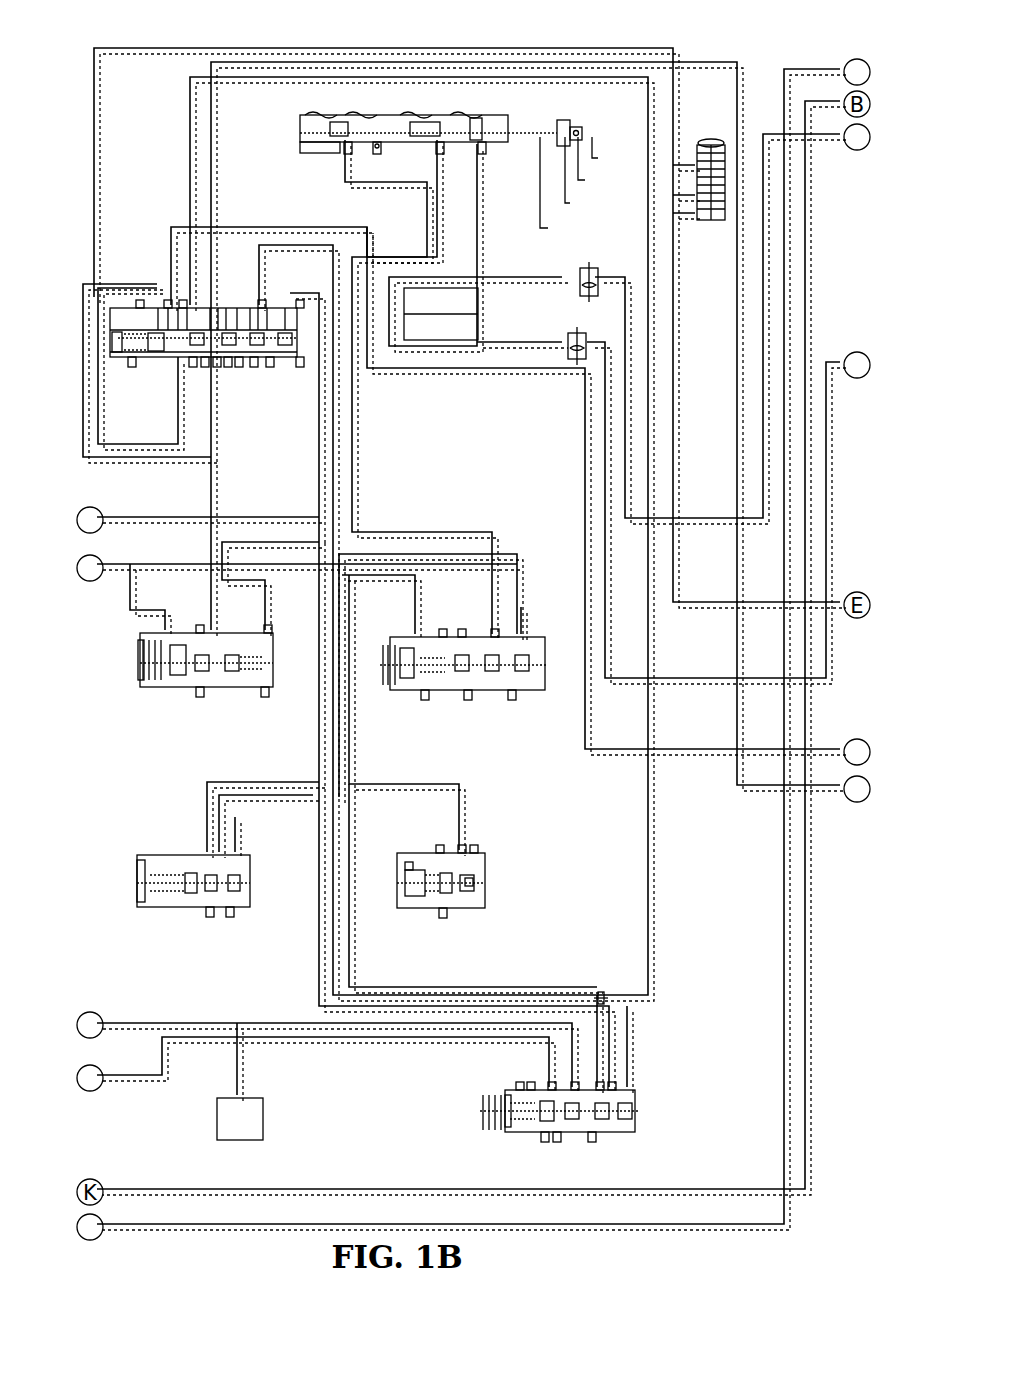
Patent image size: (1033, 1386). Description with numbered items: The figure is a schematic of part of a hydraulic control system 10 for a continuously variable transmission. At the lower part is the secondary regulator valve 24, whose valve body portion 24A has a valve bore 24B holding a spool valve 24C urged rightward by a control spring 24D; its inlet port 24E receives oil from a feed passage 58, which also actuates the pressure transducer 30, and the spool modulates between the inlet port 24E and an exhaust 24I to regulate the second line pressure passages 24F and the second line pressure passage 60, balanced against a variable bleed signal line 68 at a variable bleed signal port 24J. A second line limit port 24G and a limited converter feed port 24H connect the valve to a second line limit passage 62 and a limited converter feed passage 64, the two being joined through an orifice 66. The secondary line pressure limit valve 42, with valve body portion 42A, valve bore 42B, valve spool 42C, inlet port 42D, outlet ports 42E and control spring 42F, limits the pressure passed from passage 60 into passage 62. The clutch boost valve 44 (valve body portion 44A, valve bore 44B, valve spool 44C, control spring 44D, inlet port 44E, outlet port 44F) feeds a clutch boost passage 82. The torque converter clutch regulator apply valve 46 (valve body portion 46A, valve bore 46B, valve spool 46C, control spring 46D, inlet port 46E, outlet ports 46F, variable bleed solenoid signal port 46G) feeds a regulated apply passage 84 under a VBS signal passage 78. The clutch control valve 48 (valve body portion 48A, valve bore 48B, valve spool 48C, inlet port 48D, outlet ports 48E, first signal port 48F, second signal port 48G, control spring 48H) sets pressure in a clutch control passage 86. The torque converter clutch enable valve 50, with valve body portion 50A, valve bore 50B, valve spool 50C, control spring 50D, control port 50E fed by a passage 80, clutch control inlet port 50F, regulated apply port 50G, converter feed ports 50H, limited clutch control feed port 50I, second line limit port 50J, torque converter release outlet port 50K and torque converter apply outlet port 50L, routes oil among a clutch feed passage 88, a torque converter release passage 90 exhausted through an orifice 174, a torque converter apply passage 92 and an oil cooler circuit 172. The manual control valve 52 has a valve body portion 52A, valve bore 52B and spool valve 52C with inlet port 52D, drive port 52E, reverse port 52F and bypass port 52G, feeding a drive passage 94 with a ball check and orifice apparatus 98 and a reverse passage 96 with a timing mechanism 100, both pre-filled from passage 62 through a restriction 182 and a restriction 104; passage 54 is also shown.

The control system 10 is at (352, 45).
The secondary regulator valve 24 is at (470, 1115).
The valve body portion 24A is at (505, 1100).
The valve bore 24B is at (552, 1110).
The spool valve 24C is at (545, 1135).
The control spring 24D is at (485, 1115).
The inlet port 24E is at (560, 1090).
The second line pressure passages 24F is at (598, 1125).
The second line limit port 24G is at (600, 1095).
The limited converter feed port 24H is at (610, 1110).
The exhaust 24I is at (558, 1138).
The variable bleed signal port 24J is at (500, 1090).
The pressure transducer 30 is at (212, 1130).
The secondary line pressure limit valve 42 is at (140, 858).
The valve body portion 42A is at (150, 865).
The valve bore 42B is at (210, 905).
The valve spool 42C is at (228, 900).
The inlet port 42D is at (205, 850).
The outlet ports 42E is at (240, 855).
The control spring 42F is at (152, 880).
The clutch boost valve 44 is at (398, 860).
The valve body portion 44A is at (440, 855).
The valve bore 44B is at (470, 880).
The valve spool 44C is at (443, 900).
The control spring 44D is at (420, 868).
The inlet port 44E is at (475, 855).
The outlet port 44F is at (468, 866).
The torque converter clutch regulator apply valve 46 is at (132, 662).
The valve body portion 46A is at (140, 645).
The valve bore 46B is at (200, 655).
The valve spool 46C is at (200, 690).
The control spring 46D is at (265, 683).
The inlet port 46E is at (215, 650).
The outlet ports 46F is at (265, 648).
The variable bleed solenoid signal port 46G is at (158, 633).
The clutch control valve 48 is at (390, 660).
The valve body portion 48A is at (405, 640).
The valve bore 48B is at (520, 690).
The valve spool 48C is at (468, 690).
The inlet port 48D is at (500, 580).
The outlet ports 48E is at (524, 640).
The first signal port 48F is at (458, 633).
The second signal port 48G is at (443, 633).
The control spring 48H is at (425, 690).
The torque converter clutch enable valve 50 is at (100, 338).
The valve body portion 50A is at (140, 318).
The valve bore 50B is at (205, 360).
The valve spool 50C is at (268, 352).
The control spring 50D is at (132, 350).
The control port 50E is at (305, 300).
The clutch control inlet port 50F is at (297, 352).
The regulated apply port 50G is at (168, 300).
The converter feed ports 50H is at (195, 350).
The limited clutch control feed port 50I is at (262, 300).
The second line limit port 50J is at (258, 352).
The torque converter release outlet port 50K is at (222, 352).
The torque converter apply outlet port 50L is at (183, 300).
The manual control valve 52 is at (298, 132).
The valve body portion 52A is at (320, 148).
The valve bore 52B is at (420, 133).
The spool valve 52C is at (392, 133).
The inlet port 52D is at (447, 152).
The drive port 52E is at (483, 152).
The reverse port 52F is at (345, 160).
The bypass port 52G is at (378, 152).
The fluid passage 54 is at (580, 1232).
The feed passage 58 is at (283, 1023).
The second line pressure passage 60 is at (320, 898).
The second line limit passage 62 is at (320, 540).
The limited converter feed passage 64 is at (190, 80).
The orifice 66 is at (598, 992).
The variable bleed signal line 68 is at (205, 1045).
The VBS signal passage 78 is at (118, 560).
The passage 80 is at (165, 517).
The clutch boost passage 82 is at (410, 782).
The regulated apply passage 84 is at (86, 460).
The clutch control passage 86 is at (487, 525).
The clutch feed passage 88 is at (398, 258).
The torque converter release passage 90 is at (276, 62).
The torque converter apply passage 92 is at (183, 225).
The drive passage 94 is at (500, 266).
The reverse passage 96 is at (423, 205).
The ball check and orifice apparatus 98 is at (577, 277).
The timing mechanism 100 is at (568, 336).
The restriction 104 is at (410, 335).
The oil cooler circuit 172 is at (96, 100).
The orifice 174 is at (230, 352).
The restriction 182 is at (410, 292).